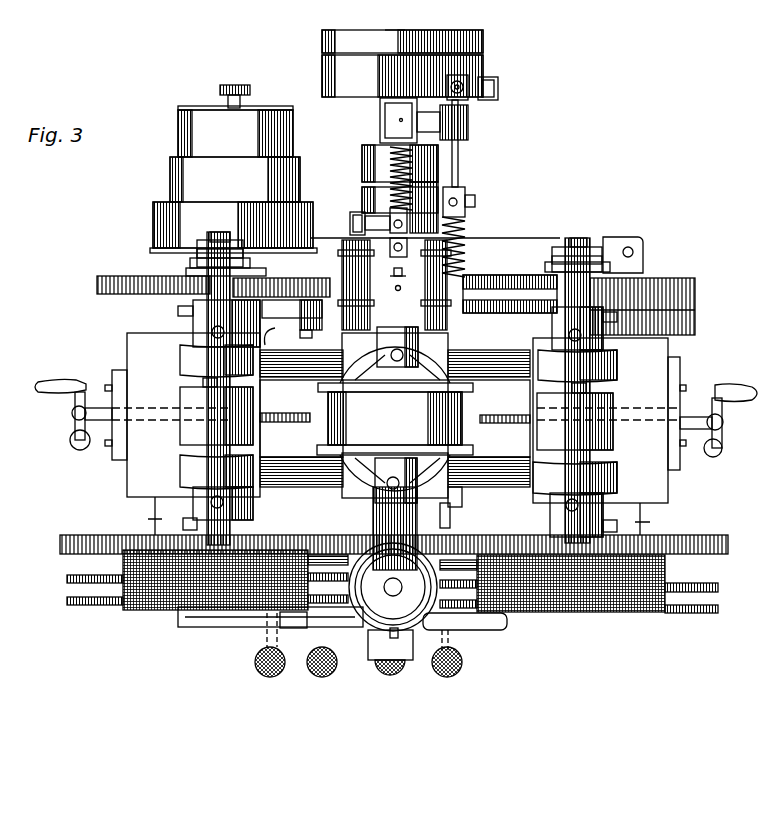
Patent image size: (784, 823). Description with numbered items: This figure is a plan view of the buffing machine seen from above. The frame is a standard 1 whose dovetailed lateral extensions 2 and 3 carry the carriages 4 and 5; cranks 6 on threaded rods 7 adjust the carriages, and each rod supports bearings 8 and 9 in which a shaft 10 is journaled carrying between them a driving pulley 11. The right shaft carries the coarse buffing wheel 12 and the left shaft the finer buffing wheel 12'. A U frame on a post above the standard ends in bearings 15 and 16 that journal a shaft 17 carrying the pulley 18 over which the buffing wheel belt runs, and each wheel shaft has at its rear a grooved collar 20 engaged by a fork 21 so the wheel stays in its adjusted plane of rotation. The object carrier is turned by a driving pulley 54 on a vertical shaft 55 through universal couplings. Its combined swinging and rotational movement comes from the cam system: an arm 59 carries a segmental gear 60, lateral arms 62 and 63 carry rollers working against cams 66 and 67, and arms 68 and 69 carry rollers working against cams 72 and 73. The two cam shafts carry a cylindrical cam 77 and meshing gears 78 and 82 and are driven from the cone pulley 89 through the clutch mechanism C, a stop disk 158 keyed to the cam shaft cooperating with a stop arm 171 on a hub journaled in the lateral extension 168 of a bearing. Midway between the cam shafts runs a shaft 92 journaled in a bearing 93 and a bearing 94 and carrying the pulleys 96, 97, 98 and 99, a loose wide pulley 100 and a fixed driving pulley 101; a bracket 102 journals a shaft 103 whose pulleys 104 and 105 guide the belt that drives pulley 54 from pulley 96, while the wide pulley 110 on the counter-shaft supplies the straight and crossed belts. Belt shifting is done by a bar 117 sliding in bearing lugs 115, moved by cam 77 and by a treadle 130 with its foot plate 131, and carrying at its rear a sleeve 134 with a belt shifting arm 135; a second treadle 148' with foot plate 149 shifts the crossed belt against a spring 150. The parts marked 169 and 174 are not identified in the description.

The standard 1 is at (396, 516).
The dovetailed lateral extension 2 is at (118, 479).
The dovetailed lateral extension 3 is at (672, 484).
The carriage 4 is at (193, 415).
The carriage 5 is at (600, 420).
The crank 6 is at (72, 437).
The threaded rod 7 is at (395, 418).
The bearing 8 is at (398, 475).
The bearing 9 is at (207, 357).
The shaft 10 is at (203, 384).
The driving pulley 11 is at (183, 435).
The coarse buffing wheel 12 is at (571, 596).
The finer buffing wheel 12' is at (215, 594).
The bearing 15 is at (377, 486).
The bearing 16 is at (378, 352).
The shaft 17 is at (436, 487).
The pulley 18 is at (395, 419).
The grooved collar 20 is at (215, 250).
The fork 21 is at (198, 258).
The driving pulley 54 is at (358, 562).
The shaft 55 is at (400, 570).
The arm 59 is at (390, 637).
The segmental gear 60 is at (335, 618).
The lateral arm 62 is at (305, 628).
The lateral arm 63 is at (416, 636).
The cam 66 is at (67, 601).
The cam 67 is at (718, 606).
The lateral arm 68 is at (320, 565).
The lateral arm 69 is at (453, 565).
The cam 72 is at (67, 579).
The cam 73 is at (718, 587).
The cylindrical cam 77 is at (695, 296).
The gear 78 is at (728, 547).
The gear 82 is at (60, 543).
The cone pulley 89 is at (233, 169).
The shaft 92 is at (397, 30).
The bearing 93 is at (373, 533).
The bearing 94 is at (380, 117).
The pulley 96 is at (463, 240).
The pulley 97 is at (452, 217).
The pulley 98 is at (420, 192).
The pulley 99 is at (440, 160).
The wide pulley 100 is at (483, 64).
The driving pulley 101 is at (466, 31).
The bracket 102 is at (407, 285).
The shaft 103 is at (343, 295).
The pulley 104 is at (347, 268).
The pulley 105 is at (447, 268).
The wide pulley 110 is at (287, 339).
The bearing lug 115 is at (462, 492).
The bar 117 is at (450, 516).
The treadle 130 is at (448, 640).
The foot plate 131 is at (455, 672).
The sleeve 134 is at (498, 87).
The belt shifting arm 135 is at (462, 100).
The treadle 148' is at (270, 657).
The foot plate 149 is at (390, 676).
The spring 150 is at (392, 165).
The stop disk 158 is at (195, 297).
The lateral extension 168 is at (305, 300).
The pin 169 is at (316, 341).
The stop arm 171 is at (267, 298).
The plate 174 is at (200, 264).
The clutch mechanism C is at (215, 272).